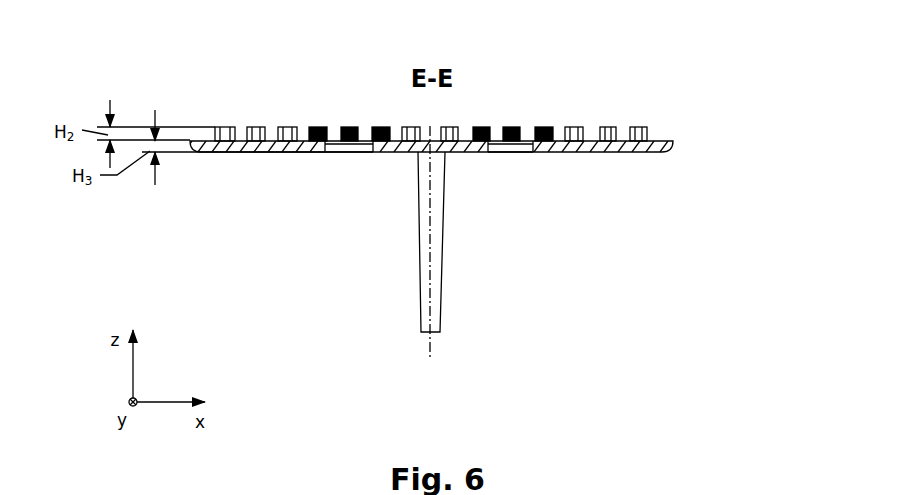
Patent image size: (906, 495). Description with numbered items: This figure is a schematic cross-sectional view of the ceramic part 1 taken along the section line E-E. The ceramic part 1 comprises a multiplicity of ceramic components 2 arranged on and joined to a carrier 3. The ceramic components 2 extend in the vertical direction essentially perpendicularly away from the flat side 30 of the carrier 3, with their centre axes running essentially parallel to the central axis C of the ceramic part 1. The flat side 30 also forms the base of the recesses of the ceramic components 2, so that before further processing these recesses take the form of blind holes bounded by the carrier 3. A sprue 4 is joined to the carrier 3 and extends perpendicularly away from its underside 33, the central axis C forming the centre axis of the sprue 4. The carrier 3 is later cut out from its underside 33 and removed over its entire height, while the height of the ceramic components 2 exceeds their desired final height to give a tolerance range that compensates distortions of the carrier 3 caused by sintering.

The ceramic part 1 is at (222, 47).
The ceramic components 2 is at (431, 92).
The carrier 3 is at (708, 177).
The flat side 30 is at (447, 114).
The underside 33 is at (250, 191).
The sprue 4 is at (413, 293).
The central axis C is at (401, 248).